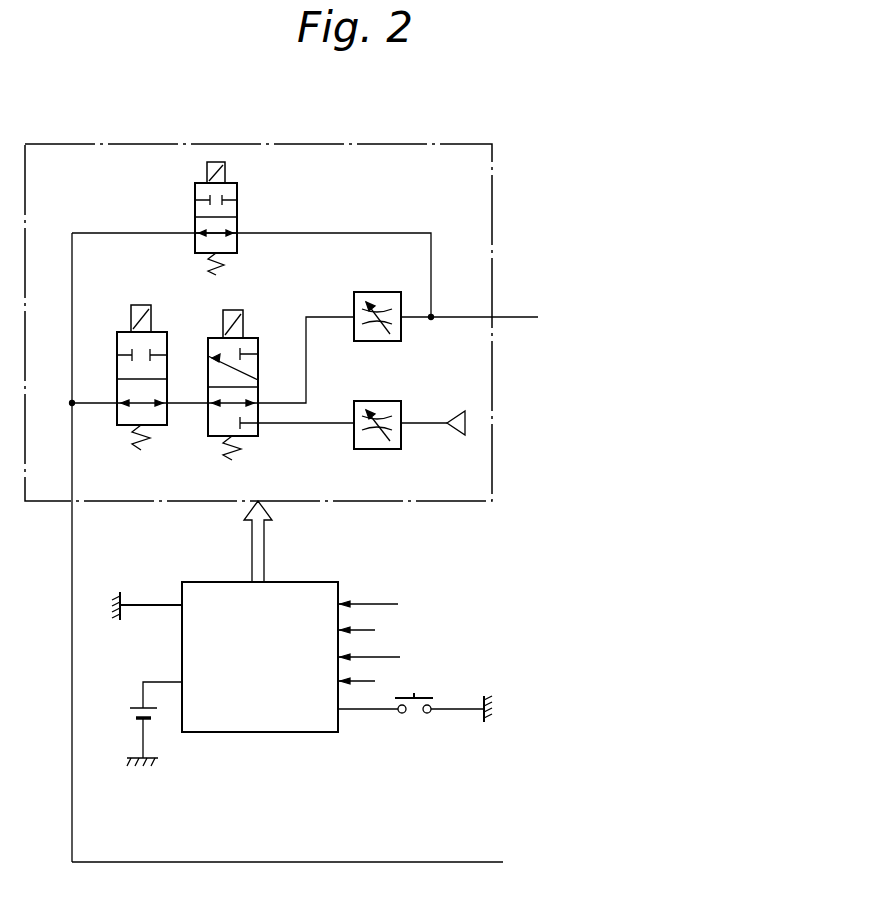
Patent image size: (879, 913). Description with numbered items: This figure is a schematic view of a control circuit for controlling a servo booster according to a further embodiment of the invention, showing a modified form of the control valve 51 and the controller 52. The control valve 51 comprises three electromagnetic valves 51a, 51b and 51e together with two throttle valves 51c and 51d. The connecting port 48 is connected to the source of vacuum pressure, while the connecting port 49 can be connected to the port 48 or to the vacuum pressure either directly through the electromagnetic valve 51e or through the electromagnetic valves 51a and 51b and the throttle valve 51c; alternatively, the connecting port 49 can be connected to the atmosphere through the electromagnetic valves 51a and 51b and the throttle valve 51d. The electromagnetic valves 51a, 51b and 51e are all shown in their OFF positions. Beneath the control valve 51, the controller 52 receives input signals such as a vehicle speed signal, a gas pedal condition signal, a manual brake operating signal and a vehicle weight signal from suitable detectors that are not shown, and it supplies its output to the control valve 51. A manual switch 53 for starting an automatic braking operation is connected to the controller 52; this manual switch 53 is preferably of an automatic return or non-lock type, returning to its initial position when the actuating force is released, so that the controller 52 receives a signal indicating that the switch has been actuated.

The control valve 51 is at (432, 502).
The electromagnetic valve 51a is at (117, 338).
The electromagnetic valve 51b is at (208, 345).
The throttle valve 51c is at (358, 292).
The throttle valve 51d is at (372, 401).
The electromagnetic valve 51e is at (237, 185).
The connecting port 48 is at (500, 316).
The connecting port 49 is at (305, 862).
The controller 52 is at (300, 733).
The manual switch 53 is at (416, 715).